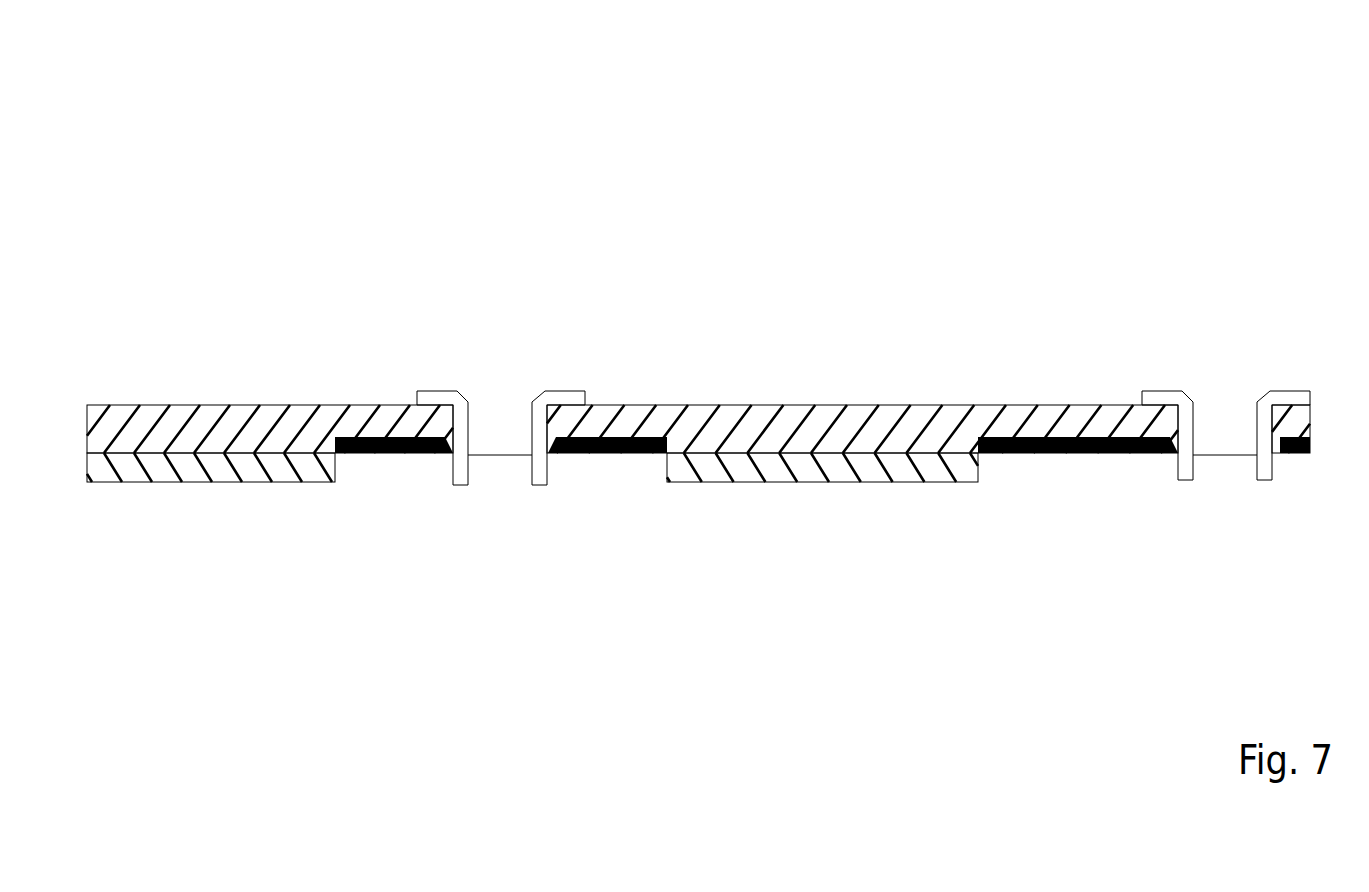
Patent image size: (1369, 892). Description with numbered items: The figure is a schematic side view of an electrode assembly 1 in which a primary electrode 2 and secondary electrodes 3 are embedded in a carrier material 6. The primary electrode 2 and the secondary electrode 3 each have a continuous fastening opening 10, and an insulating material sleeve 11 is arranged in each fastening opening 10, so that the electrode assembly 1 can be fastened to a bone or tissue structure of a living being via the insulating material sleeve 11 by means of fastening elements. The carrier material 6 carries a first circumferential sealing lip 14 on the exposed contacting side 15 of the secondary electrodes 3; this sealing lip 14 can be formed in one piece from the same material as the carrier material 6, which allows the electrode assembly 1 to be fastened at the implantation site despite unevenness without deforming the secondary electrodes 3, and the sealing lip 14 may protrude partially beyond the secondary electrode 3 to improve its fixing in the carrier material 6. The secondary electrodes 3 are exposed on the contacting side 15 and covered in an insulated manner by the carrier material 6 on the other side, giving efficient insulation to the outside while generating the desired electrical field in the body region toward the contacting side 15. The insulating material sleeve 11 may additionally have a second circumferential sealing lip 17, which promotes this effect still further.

The electrode assembly 1 is at (215, 275).
The primary electrode 2 is at (1040, 410).
The secondary electrode 3 is at (372, 405).
The carrier material 6 is at (278, 405).
The fastening opening 10 is at (507, 440).
The insulating material sleeve 11 is at (570, 400).
The first circumferential sealing lip 14 is at (235, 455).
The contacting side 15 is at (400, 560).
The second circumferential sealing lip 17 is at (1265, 470).